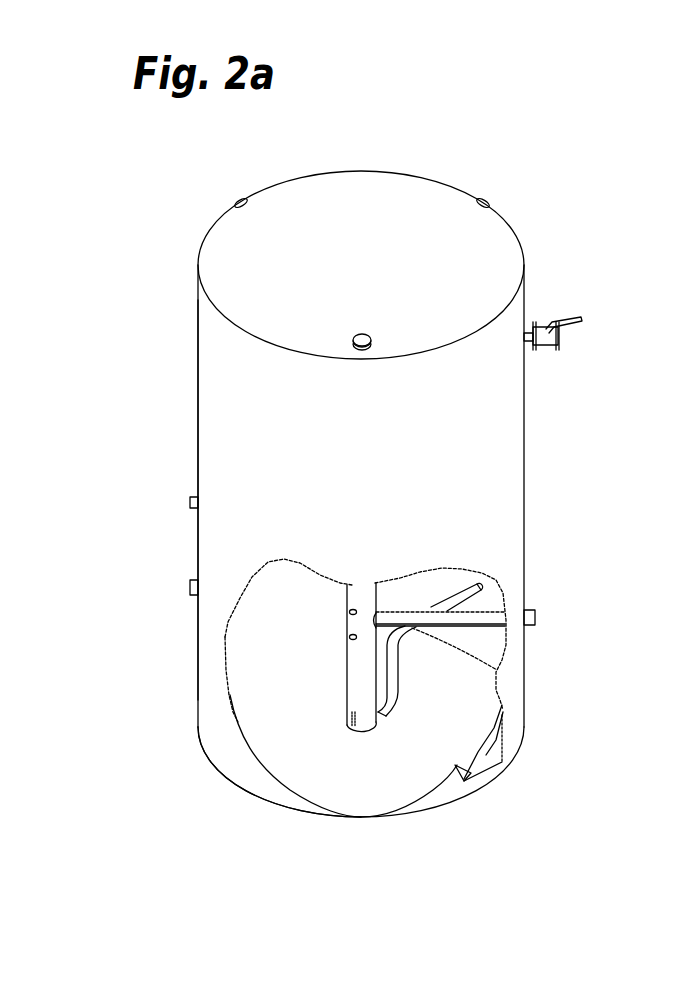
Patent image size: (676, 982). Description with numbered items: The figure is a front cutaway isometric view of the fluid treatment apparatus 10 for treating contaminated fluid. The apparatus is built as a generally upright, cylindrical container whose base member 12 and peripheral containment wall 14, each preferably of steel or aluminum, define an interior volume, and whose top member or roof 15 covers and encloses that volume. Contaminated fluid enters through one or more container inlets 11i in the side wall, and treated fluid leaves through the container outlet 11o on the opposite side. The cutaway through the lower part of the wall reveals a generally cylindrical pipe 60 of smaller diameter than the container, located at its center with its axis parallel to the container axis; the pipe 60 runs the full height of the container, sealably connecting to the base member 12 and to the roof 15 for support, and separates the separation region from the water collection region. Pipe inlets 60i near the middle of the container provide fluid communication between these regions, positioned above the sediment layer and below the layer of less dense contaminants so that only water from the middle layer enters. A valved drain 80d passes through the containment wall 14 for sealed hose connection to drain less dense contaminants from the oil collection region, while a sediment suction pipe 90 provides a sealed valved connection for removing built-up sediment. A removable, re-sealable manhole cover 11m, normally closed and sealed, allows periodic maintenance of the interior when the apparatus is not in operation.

The fluid treatment apparatus 10 is at (564, 152).
The base member 12 is at (390, 777).
The peripheral containment wall 14 is at (358, 476).
The roof 15 is at (394, 276).
The container inlet 11i is at (180, 491).
The container outlet 11o is at (553, 612).
The manhole cover 11m is at (500, 742).
The pipe 60 is at (358, 668).
The pipe inlet 60i is at (342, 611).
The valved drain 80d is at (554, 304).
The sediment suction pipe 90 is at (403, 677).